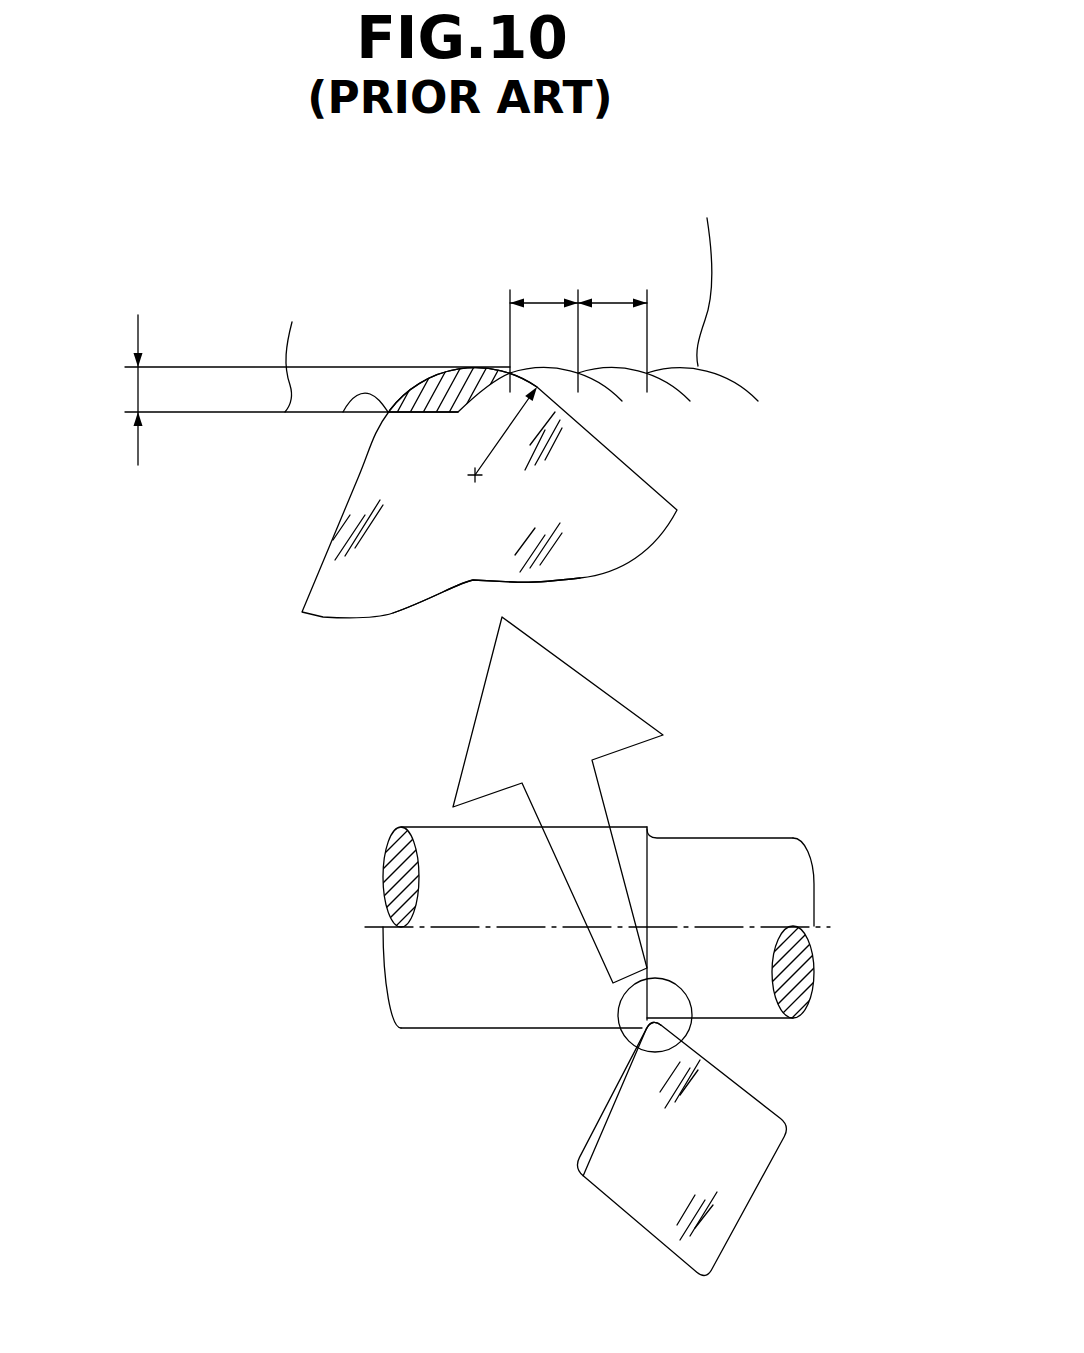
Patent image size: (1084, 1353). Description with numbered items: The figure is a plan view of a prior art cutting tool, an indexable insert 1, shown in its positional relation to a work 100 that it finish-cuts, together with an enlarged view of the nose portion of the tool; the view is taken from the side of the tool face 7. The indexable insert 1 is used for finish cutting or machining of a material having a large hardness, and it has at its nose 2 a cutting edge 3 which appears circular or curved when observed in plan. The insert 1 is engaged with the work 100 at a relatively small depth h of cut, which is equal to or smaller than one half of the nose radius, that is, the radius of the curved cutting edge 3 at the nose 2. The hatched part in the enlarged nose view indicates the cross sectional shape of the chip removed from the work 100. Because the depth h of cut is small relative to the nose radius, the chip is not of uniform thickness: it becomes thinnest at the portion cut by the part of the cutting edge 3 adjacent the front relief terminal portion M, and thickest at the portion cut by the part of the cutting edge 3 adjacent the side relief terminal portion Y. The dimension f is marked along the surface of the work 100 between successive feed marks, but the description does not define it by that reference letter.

The work 100 is at (613, 230).
The cutting tool 1 is at (279, 534).
The nose 2 is at (381, 348).
The cutting edge 3 is at (437, 370).
The tool face 7 is at (408, 585).
The depth of cut h is at (121, 390).
The front relief terminal portion M is at (510, 372).
The feed f is at (578, 329).
The side relief terminal portion Y is at (364, 395).